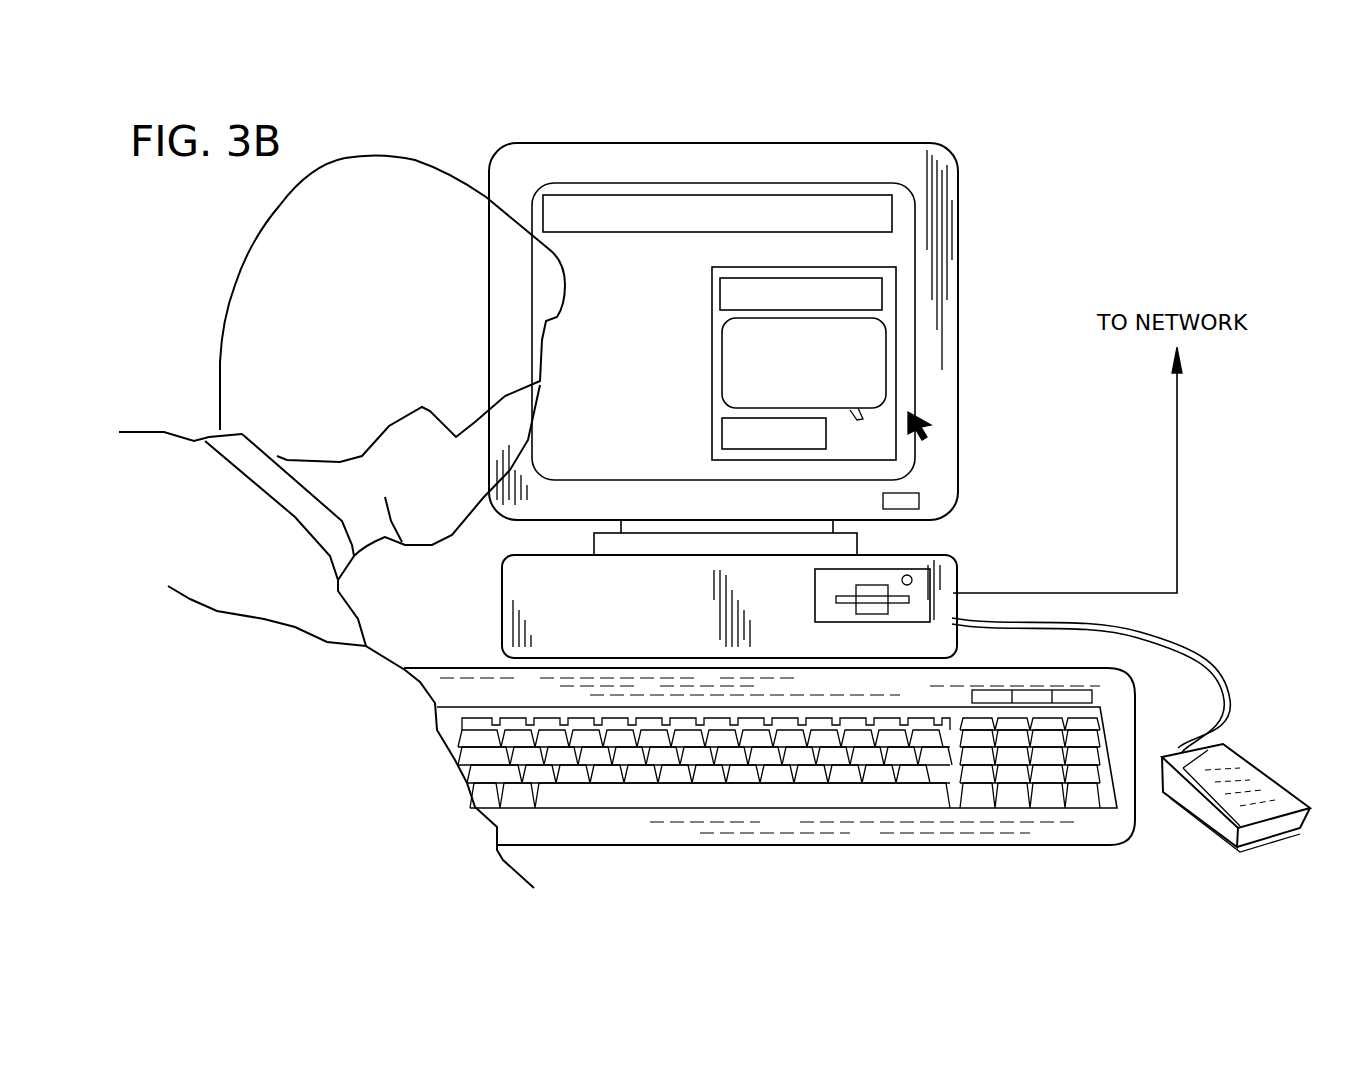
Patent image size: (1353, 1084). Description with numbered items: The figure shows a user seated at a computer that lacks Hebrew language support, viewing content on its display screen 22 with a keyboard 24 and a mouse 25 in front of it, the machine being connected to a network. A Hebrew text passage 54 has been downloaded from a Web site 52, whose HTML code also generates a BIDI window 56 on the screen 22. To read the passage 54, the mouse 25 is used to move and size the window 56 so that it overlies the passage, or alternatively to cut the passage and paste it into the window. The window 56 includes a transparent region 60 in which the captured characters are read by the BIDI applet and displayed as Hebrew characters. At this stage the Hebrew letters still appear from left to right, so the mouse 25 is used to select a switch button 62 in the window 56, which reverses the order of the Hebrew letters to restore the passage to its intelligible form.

The display screen 22 is at (958, 333).
The keyboard 24 is at (1050, 845).
The mouse 25 is at (1283, 772).
The Web site 52 is at (892, 215).
The text passage 54 is at (925, 432).
The BIDI window 56 is at (882, 295).
The transparent region 60 is at (886, 362).
The switch button 62 is at (826, 437).